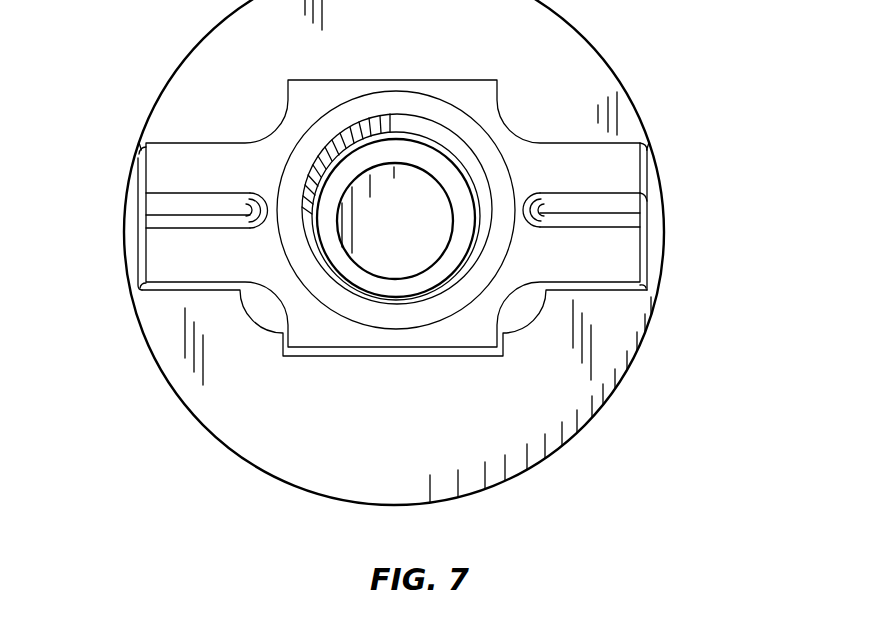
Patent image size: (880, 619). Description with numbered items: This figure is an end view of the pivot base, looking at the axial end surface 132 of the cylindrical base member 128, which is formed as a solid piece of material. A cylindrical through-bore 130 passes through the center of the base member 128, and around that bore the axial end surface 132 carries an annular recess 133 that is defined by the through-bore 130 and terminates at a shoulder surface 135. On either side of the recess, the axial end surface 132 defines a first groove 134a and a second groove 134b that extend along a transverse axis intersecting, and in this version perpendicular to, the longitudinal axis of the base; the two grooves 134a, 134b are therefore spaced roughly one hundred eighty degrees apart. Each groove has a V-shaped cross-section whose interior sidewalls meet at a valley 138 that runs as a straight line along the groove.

The cylindrical base member 128 is at (635, 95).
The cylindrical through-bore 130 is at (438, 185).
The axial end surface 132 is at (594, 250).
The annular recess 133 is at (420, 148).
The first groove 134a is at (618, 192).
The second groove 134b is at (170, 193).
The shoulder surface 135 is at (327, 199).
The valley 138 is at (598, 218).